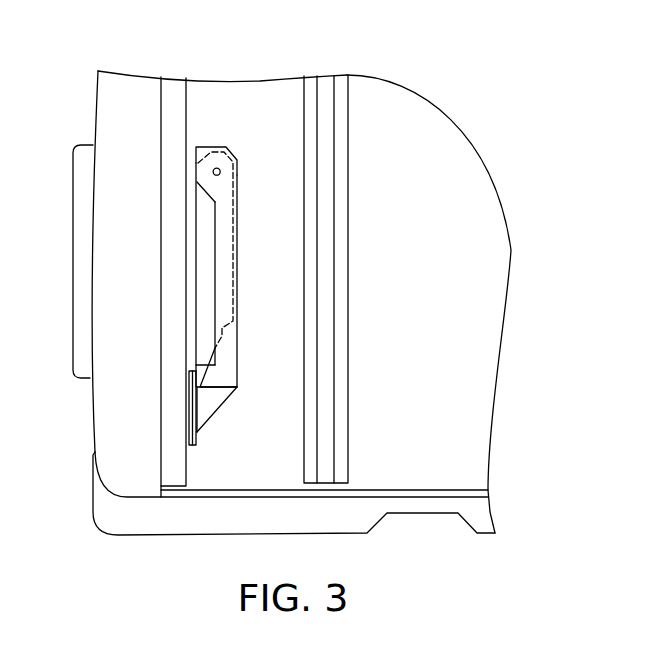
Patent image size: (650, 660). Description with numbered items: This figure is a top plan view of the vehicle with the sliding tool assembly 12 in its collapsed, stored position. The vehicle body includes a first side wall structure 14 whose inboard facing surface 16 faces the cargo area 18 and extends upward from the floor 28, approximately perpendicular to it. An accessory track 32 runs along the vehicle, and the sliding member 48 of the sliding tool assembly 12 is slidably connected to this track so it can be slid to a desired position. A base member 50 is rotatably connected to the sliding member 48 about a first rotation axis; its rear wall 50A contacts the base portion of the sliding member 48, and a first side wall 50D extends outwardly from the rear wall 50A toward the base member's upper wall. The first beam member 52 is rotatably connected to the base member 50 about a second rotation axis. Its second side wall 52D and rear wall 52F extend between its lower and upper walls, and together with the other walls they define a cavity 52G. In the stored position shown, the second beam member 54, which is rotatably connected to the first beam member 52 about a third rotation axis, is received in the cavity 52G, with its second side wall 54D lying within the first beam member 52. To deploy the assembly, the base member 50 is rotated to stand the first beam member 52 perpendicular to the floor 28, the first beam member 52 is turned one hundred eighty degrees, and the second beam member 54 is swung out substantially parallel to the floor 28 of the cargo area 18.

The sliding tool assembly 12 is at (240, 368).
The first side wall structure 14 is at (122, 115).
The inboard facing surface 16 is at (162, 129).
The cargo area 18 is at (440, 345).
The floor 28 is at (435, 429).
The accessory track 32 is at (192, 104).
The sliding member 48 is at (198, 442).
The base member 50 is at (220, 412).
The rear wall 50A is at (195, 422).
The first side wall 50D is at (208, 398).
The first beam member 52 is at (238, 340).
The second side wall 52D is at (217, 188).
The rear wall 52F is at (240, 222).
The cavity 52G is at (226, 268).
The second beam member 54 is at (208, 228).
The second side wall 54D is at (200, 302).